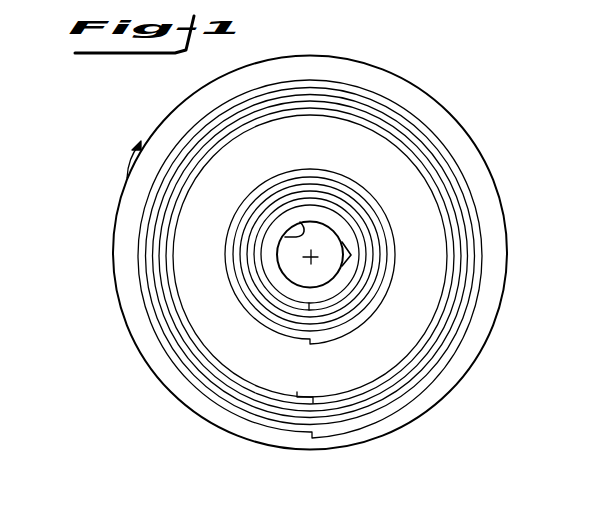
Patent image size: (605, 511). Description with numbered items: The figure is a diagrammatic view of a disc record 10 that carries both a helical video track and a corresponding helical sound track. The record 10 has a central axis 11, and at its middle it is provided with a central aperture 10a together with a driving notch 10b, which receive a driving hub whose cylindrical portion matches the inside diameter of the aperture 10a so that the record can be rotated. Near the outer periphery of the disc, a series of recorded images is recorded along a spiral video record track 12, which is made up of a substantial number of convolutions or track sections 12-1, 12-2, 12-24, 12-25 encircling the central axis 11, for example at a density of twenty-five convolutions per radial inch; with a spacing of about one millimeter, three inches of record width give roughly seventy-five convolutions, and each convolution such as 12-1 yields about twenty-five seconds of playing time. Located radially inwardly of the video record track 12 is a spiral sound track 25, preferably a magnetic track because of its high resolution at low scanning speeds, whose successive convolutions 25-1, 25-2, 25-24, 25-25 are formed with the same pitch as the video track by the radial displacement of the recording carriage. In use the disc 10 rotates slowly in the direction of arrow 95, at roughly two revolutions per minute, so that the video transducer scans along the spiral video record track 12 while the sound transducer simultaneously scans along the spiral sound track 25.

The disc record 10 is at (509, 222).
The central aperture 10a is at (283, 240).
The driving notch 10b is at (349, 252).
The central axis 11 is at (305, 258).
The arrow indicating direction of disc rotation 95 is at (127, 163).
The spiral video record track 12 is at (347, 286).
The convolution of the spiral video record track 12-1 is at (390, 418).
The convolution of the spiral video record track 12-2 is at (427, 376).
The convolution of the spiral video record track 12-24 is at (432, 334).
The convolution of the spiral video record track 12-25 is at (298, 393).
The spiral sound track 25 is at (324, 249).
The convolution of the spiral sound track 25-1 is at (331, 341).
The convolution of the spiral sound track 25-2 is at (387, 278).
The convolution of the spiral sound track 25-24 is at (332, 308).
The convolution of the spiral sound track 25-25 is at (287, 300).